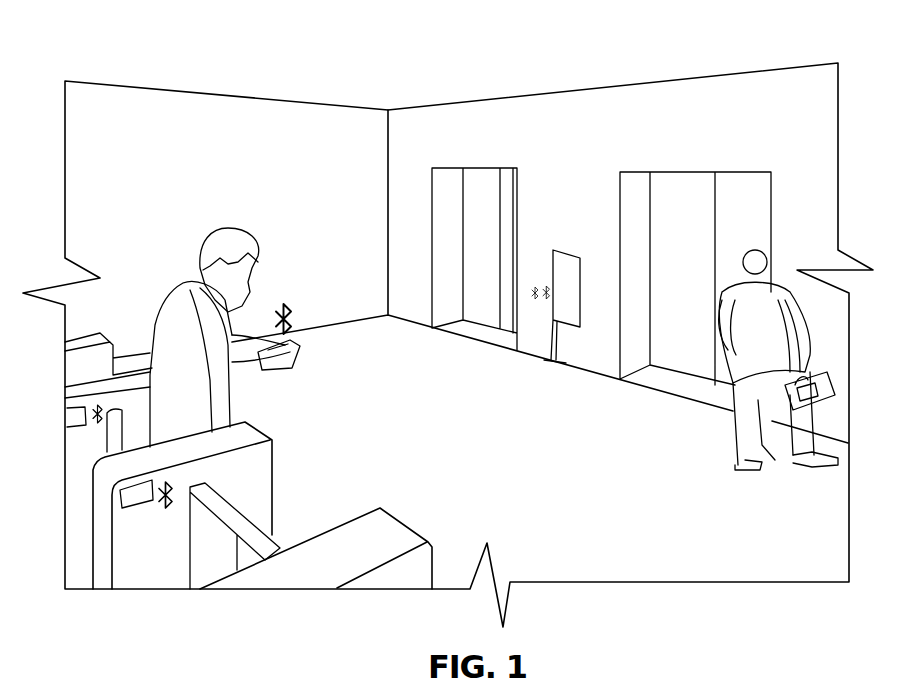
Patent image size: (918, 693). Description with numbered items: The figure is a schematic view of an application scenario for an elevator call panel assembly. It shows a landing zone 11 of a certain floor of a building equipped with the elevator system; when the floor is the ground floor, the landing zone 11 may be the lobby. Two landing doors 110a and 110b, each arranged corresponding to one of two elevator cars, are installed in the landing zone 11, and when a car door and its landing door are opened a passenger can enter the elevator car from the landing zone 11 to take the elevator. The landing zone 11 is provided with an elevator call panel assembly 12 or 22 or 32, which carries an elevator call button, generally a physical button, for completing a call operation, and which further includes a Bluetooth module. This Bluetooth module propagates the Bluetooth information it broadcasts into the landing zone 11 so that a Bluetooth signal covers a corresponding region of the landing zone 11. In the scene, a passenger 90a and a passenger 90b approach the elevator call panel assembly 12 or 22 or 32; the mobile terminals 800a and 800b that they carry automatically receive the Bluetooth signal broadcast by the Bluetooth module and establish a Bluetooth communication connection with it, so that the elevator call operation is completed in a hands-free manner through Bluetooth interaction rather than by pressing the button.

The landing zone 11 is at (305, 88).
The elevator call panel assembly 12 is at (524, 321).
The elevator call panel assembly 22 is at (524, 321).
The elevator call panel assembly 32 is at (618, 380).
The landing door 110a is at (478, 165).
The landing door 110b is at (703, 174).
The passenger 90a is at (197, 265).
The passenger 90b is at (783, 266).
The mobile terminal 800a is at (292, 342).
The mobile terminal 800b is at (812, 405).